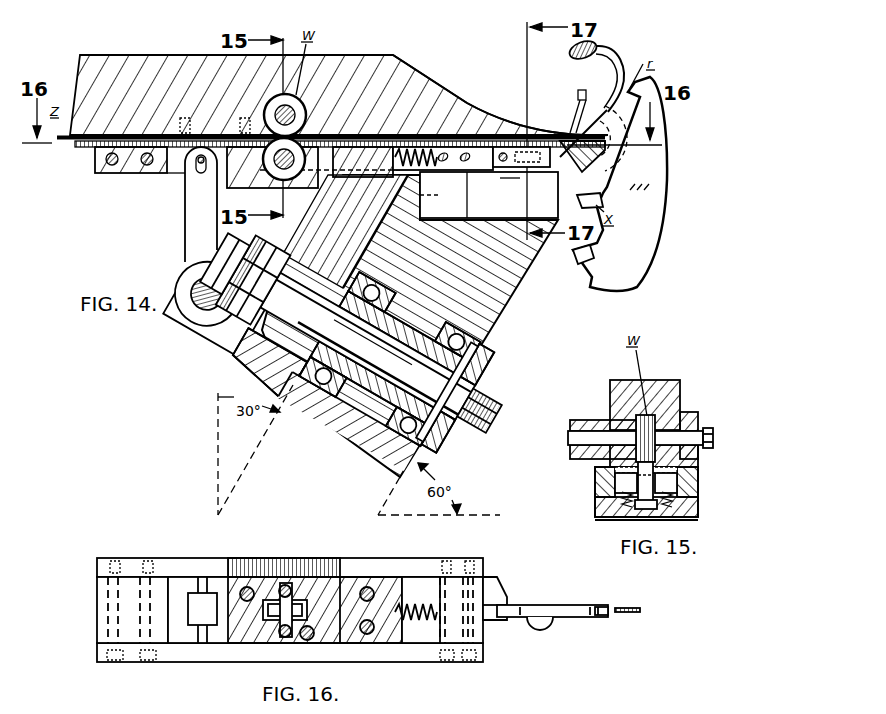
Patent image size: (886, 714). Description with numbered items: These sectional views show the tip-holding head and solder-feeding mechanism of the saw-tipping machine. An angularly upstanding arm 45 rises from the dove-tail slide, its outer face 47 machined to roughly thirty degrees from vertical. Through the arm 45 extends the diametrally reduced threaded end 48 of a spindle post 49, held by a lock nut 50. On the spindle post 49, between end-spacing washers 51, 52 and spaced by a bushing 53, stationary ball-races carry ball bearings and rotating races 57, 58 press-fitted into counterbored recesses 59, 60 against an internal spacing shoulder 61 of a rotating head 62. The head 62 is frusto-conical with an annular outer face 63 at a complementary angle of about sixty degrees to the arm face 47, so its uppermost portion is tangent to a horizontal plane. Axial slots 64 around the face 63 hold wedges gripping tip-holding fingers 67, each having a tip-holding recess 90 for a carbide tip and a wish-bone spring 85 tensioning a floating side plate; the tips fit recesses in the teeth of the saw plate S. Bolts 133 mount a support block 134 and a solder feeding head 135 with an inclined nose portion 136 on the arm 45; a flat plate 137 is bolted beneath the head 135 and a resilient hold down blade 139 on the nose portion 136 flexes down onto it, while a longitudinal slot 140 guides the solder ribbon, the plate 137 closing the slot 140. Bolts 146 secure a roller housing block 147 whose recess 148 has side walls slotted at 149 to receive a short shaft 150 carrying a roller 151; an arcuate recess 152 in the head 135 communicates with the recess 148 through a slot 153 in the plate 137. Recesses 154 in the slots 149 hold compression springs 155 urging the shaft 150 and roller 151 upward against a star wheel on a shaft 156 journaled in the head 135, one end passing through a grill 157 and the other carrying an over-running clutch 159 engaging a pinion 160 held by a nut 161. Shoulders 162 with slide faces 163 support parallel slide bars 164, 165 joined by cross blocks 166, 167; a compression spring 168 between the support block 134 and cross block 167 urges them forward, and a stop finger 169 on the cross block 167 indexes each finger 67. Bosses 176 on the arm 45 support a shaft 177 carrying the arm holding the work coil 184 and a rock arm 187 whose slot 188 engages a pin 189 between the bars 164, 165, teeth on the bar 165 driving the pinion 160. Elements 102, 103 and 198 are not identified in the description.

In FIG. 14, the arm 45 is at (266, 364).
In FIG. 14, the outer face of the arm 47 is at (347, 421).
In FIG. 14, the threaded end 48 is at (253, 279).
In FIG. 14, the spindle post 49 is at (367, 346).
In FIG. 14, the lock nut 50 is at (225, 263).
In FIG. 14, the end-spacing washer 51 is at (447, 391).
In FIG. 14, the end-spacing washer 52 is at (285, 384).
In FIG. 14, the bushing 53 is at (433, 384).
In FIG. 14, the rotating race 57 is at (372, 339).
In FIG. 14, the rotating race 58 is at (478, 364).
In FIG. 14, the counterbored recess 59 is at (347, 334).
In FIG. 14, the counterbored recess 60 is at (375, 384).
In FIG. 14, the internal spacing shoulder 61 is at (404, 334).
In FIG. 14, the rotating head 62 is at (506, 280).
In FIG. 14, the annular outer face 63 is at (447, 171).
In FIG. 14, the axial slots 64 is at (513, 226).
In FIG. 14, the tip-holding finger 67 is at (487, 176).
In FIG. 16, the tip-holding finger 67 is at (577, 598).
In FIG. 16, the wish-bone spring 85 is at (543, 631).
In FIG. 16, the tip-holding recess 90 is at (600, 615).
In FIG. 14, the threaded end 102 is at (479, 411).
In FIG. 14, the end block 103 is at (439, 431).
In FIG. 14, the bolts 133 is at (393, 56).
In FIG. 16, the bolts 133 is at (372, 589).
In FIG. 14, the support block 134 is at (340, 182).
In FIG. 16, the support block 134 is at (395, 643).
In FIG. 14, the solder feeding head 135 is at (408, 78).
In FIG. 15, the solder feeding head 135 is at (650, 380).
In FIG. 14, the inclined nose portion 136 is at (488, 112).
In FIG. 14, the flat plate 137 is at (97, 143).
In FIG. 14, the resilient hold down blade 139 is at (533, 133).
In FIG. 14, the longitudinal slot 140 is at (140, 128).
In FIG. 16, the bolts 146 is at (247, 587).
In FIG. 15, the roller housing block 147 is at (612, 518).
In FIG. 16, the roller housing block 147 is at (310, 580).
In FIG. 15, the recess 148 is at (641, 510).
In FIG. 16, the recess 148 is at (274, 583).
In FIG. 15, the vertical slots 149 is at (700, 467).
In FIG. 16, the vertical slots 149 is at (285, 585).
In FIG. 15, the short shaft 150 is at (699, 477).
In FIG. 16, the short shaft 150 is at (291, 600).
In FIG. 14, the roller 151 is at (228, 188).
In FIG. 15, the roller 151 is at (618, 478).
In FIG. 16, the roller 151 is at (270, 618).
In FIG. 14, the arcuate recess 152 is at (280, 108).
In FIG. 15, the arcuate recess 152 is at (652, 415).
In FIG. 14, the slot 153 is at (302, 108).
In FIG. 15, the slot 153 is at (700, 453).
In FIG. 15, the recesses 154 is at (674, 505).
In FIG. 15, the compression springs 155 is at (689, 518).
In FIG. 16, the compression springs 155 is at (273, 632).
In FIG. 14, the shaft 156 is at (289, 56).
In FIG. 15, the shaft 156 is at (567, 439).
In FIG. 15, the grill 157 is at (580, 421).
In FIG. 15, the over-running clutch 159 is at (706, 424).
In FIG. 15, the pinion 160 is at (688, 412).
In FIG. 15, the nut 161 is at (711, 430).
In FIG. 15, the horizontal shoulders 162 is at (606, 507).
In FIG. 15, the slide faces 163 is at (620, 500).
In FIG. 15, the slide bar 164 is at (594, 470).
In FIG. 16, the slide bar 164 is at (181, 657).
In FIG. 14, the slide bar 165 is at (174, 150).
In FIG. 15, the slide bar 165 is at (753, 486).
In FIG. 16, the slide bar 165 is at (173, 563).
In FIG. 14, the cross block 166 is at (117, 174).
In FIG. 16, the cross block 166 is at (98, 612).
In FIG. 14, the cross block 167 is at (487, 134).
In FIG. 16, the cross block 167 is at (488, 588).
In FIG. 14, the compression spring 168 is at (413, 170).
In FIG. 16, the compression spring 168 is at (414, 605).
In FIG. 14, the stop finger 169 is at (502, 178).
In FIG. 16, the stop finger 169 is at (505, 600).
In FIG. 14, the bosses 176 is at (221, 298).
In FIG. 14, the shaft 177 is at (206, 293).
In FIG. 14, the work coil 184 is at (614, 95).
In FIG. 14, the rock arm 187 is at (188, 230).
In FIG. 16, the rock arm 187 is at (213, 592).
In FIG. 14, the slot 188 is at (186, 166).
In FIG. 14, the pin 189 is at (198, 168).
In FIG. 16, the pin 189 is at (198, 632).
In FIG. 14, the connector 198 is at (576, 166).
In FIG. 14, the saw plate S is at (663, 173).
In FIG. 16, the saw plate S is at (637, 607).